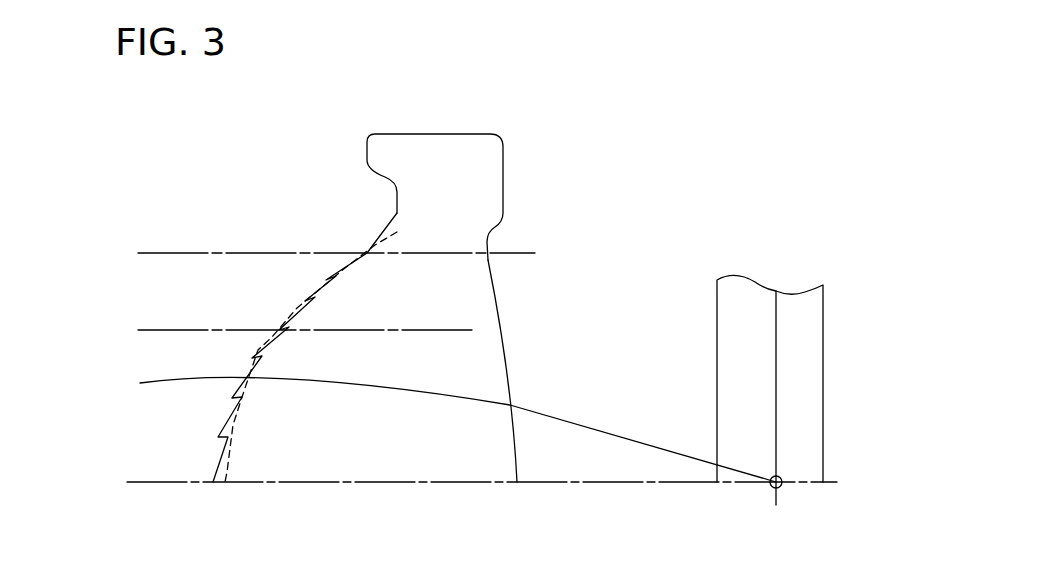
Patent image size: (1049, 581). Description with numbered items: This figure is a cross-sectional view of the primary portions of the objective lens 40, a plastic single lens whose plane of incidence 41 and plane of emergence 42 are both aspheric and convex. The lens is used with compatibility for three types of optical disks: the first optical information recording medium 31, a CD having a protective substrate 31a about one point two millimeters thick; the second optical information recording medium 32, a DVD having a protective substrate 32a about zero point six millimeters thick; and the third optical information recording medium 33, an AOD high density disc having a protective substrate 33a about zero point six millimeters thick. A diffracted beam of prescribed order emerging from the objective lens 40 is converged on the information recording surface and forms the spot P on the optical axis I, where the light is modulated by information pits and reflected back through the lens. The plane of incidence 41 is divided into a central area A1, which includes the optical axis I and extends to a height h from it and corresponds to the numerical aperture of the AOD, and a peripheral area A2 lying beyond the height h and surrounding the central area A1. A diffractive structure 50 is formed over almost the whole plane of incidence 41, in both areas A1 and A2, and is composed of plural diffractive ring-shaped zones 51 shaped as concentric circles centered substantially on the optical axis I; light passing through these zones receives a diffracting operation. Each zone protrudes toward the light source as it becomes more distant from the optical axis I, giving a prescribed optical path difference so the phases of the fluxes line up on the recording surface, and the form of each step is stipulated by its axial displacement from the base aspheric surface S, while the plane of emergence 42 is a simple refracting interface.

The objective lens 40 is at (467, 148).
The plane of incidence 41 is at (305, 336).
The plane of emergence 42 is at (517, 288).
The diffractive structure 50 is at (257, 347).
The diffractive ring-shaped zones 51 is at (262, 353).
The first optical information recording medium 31 is at (829, 390).
The second optical information recording medium 32 is at (829, 390).
The third optical information recording medium 33 is at (806, 380).
The protective substrate 31a is at (458, 410).
The protective substrate 32a is at (458, 410).
The protective substrate 33a is at (458, 410).
The spot P is at (771, 490).
The base aspheric surface S is at (227, 470).
The optical axis I is at (390, 482).
The height from the optical axis h is at (460, 481).
The central area A1 is at (131, 333).
The peripheral area A2 is at (131, 253).